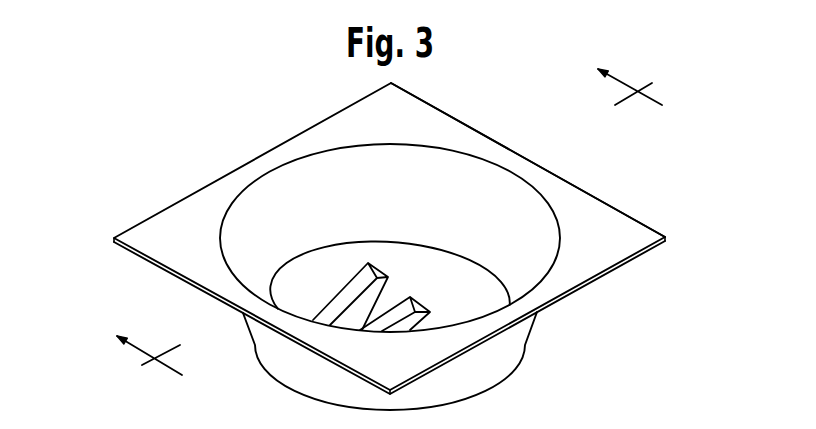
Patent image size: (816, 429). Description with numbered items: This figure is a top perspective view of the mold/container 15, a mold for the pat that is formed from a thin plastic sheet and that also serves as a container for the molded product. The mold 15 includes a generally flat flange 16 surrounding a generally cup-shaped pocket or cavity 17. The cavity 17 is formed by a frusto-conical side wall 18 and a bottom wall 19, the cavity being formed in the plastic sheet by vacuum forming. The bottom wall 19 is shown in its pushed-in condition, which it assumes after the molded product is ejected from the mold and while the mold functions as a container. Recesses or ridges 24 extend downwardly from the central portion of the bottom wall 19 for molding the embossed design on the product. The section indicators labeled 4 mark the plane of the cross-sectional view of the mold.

The mold/container 15 is at (182, 208).
The flange 16 is at (613, 227).
The cup-shaped pocket or cavity 17 is at (487, 197).
The frusto-conical side wall 18 is at (512, 343).
The bottom wall 19 is at (405, 262).
The recesses or ridges 24 is at (421, 305).
The section line 4- 4 is at (394, 224).